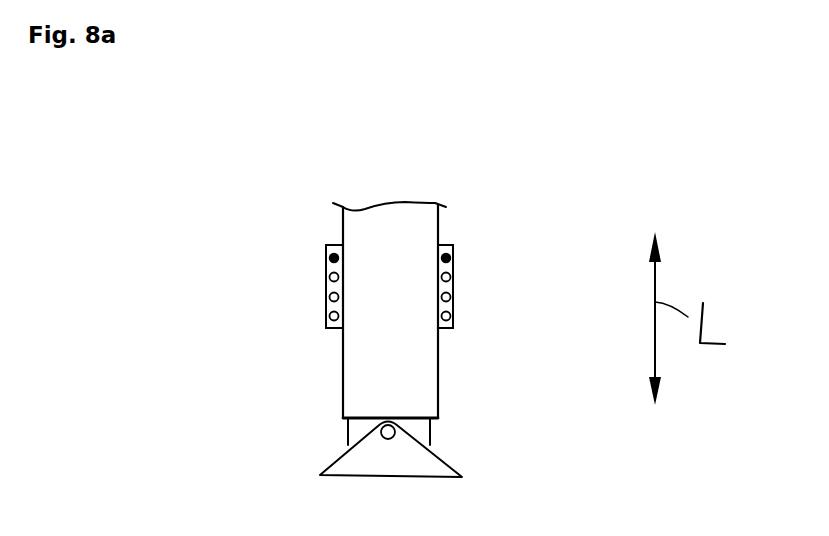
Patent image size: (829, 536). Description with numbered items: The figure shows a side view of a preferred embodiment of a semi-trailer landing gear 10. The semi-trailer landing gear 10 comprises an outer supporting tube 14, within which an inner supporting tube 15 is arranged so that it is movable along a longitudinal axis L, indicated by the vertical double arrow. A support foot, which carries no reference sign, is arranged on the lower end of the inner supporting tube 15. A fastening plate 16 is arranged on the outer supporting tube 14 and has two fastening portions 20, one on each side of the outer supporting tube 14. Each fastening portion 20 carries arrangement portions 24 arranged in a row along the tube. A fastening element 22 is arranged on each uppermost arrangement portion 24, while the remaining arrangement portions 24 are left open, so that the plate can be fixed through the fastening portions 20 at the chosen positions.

The semi-trailer landing gear 10 is at (413, 312).
The outer supporting tube 14 is at (348, 382).
The inner supporting tube 15 is at (432, 435).
The fastening plate 16 is at (310, 336).
The fastening portion 20 is at (325, 288).
The fastening element 22 is at (453, 247).
The arrangement portion 24 is at (451, 316).